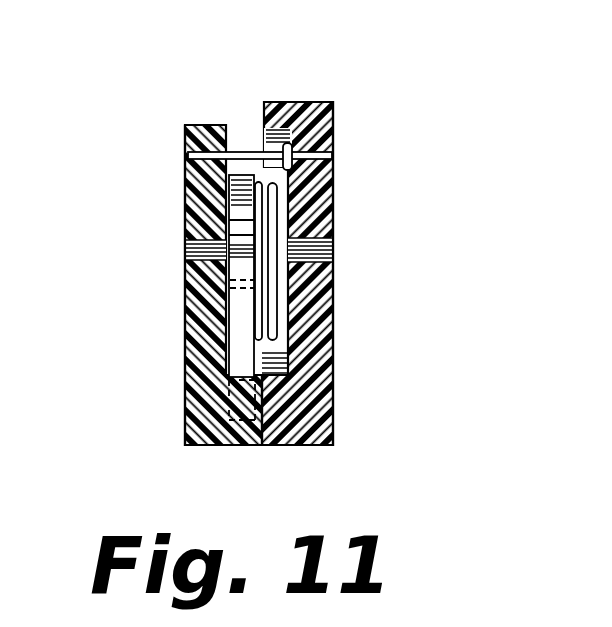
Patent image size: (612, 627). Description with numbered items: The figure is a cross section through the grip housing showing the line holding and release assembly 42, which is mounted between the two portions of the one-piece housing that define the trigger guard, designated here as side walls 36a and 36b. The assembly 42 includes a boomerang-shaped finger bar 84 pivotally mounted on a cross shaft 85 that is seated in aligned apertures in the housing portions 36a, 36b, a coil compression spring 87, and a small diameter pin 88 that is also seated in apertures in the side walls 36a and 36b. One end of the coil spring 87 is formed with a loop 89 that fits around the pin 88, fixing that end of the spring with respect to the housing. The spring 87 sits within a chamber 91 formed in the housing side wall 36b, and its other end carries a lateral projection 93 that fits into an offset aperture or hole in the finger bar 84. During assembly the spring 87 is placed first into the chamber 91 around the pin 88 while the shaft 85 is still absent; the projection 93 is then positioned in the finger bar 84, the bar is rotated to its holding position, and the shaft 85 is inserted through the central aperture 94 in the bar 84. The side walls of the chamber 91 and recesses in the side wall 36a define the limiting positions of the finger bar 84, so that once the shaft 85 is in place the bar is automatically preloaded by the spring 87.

The housing side wall 36a is at (183, 202).
The housing side wall 36b is at (334, 223).
The line holding and release assembly 42 is at (350, 193).
The finger bar 84 is at (242, 347).
The cross shaft 85 is at (185, 250).
The coil compression spring 87 is at (334, 297).
The pin 88 is at (183, 160).
The loop 89 is at (335, 130).
The chamber 91 is at (268, 103).
The lateral projection 93 is at (228, 288).
The central aperture 94 is at (242, 238).